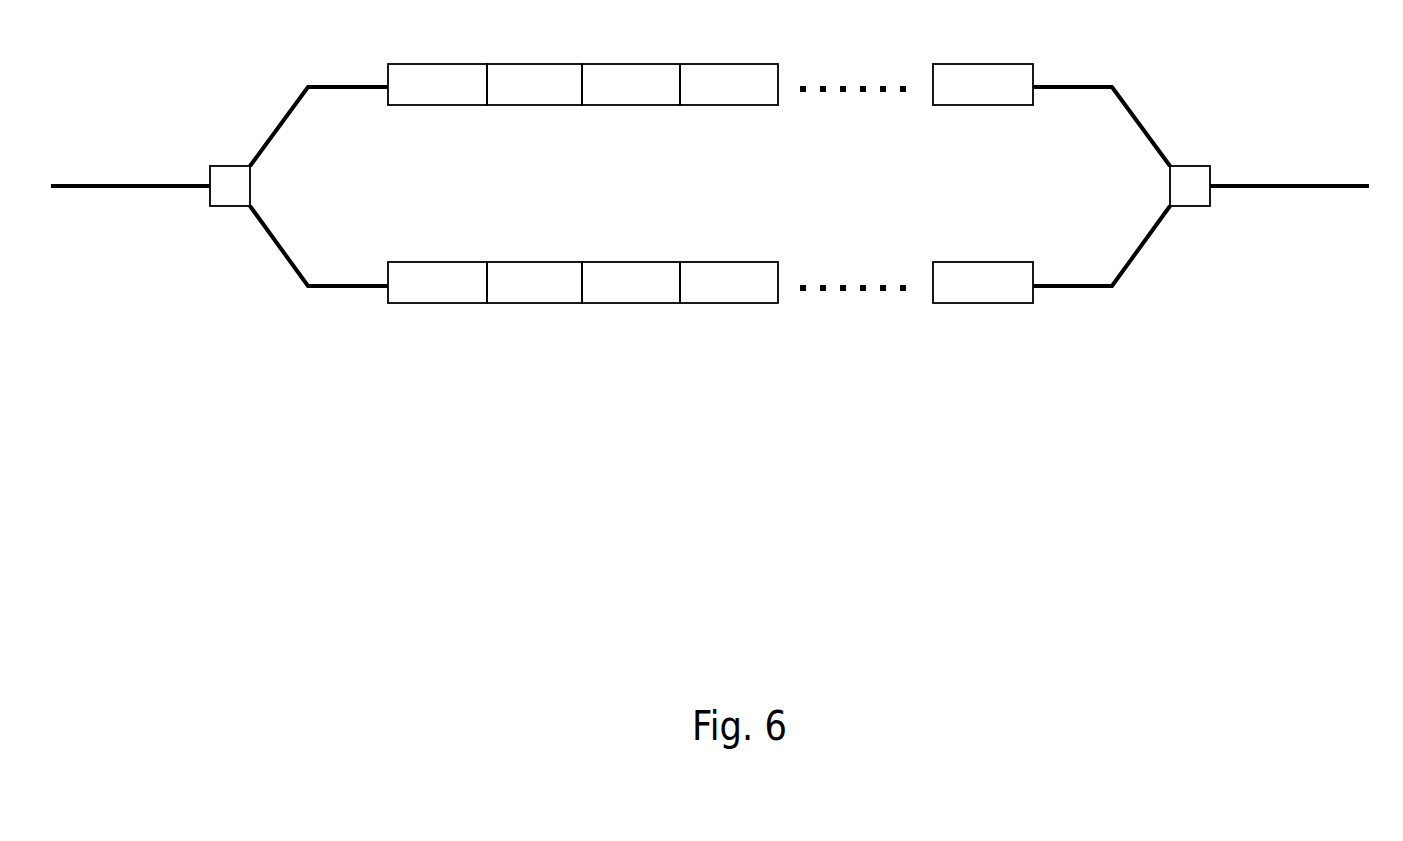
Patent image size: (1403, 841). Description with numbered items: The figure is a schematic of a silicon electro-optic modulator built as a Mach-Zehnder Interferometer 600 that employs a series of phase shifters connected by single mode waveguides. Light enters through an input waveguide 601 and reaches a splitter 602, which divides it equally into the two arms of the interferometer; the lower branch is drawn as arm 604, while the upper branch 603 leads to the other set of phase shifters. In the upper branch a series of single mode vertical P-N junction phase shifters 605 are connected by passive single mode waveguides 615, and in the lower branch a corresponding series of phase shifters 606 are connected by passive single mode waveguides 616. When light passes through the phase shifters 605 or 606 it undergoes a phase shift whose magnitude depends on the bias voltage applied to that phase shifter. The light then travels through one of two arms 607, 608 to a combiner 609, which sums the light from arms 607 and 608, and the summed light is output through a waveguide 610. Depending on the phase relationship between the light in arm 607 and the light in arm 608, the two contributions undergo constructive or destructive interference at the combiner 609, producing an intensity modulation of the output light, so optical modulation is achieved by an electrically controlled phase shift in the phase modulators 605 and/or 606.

The Mach-Zehnder Interferometer 600 is at (272, 290).
The input waveguide 601 is at (111, 183).
The splitter 602 is at (230, 186).
The upper branch waveguide 603 is at (275, 132).
The arm 604 is at (275, 244).
The phase shifter 605 is at (1008, 99).
The passive single mode waveguide 615 is at (754, 99).
The phase shifter 606 is at (1008, 298).
The passive single mode waveguide 616 is at (754, 298).
The arm 607 is at (1127, 105).
The arm 608 is at (1143, 244).
The combiner 609 is at (1183, 186).
The waveguide 610 is at (1308, 184).